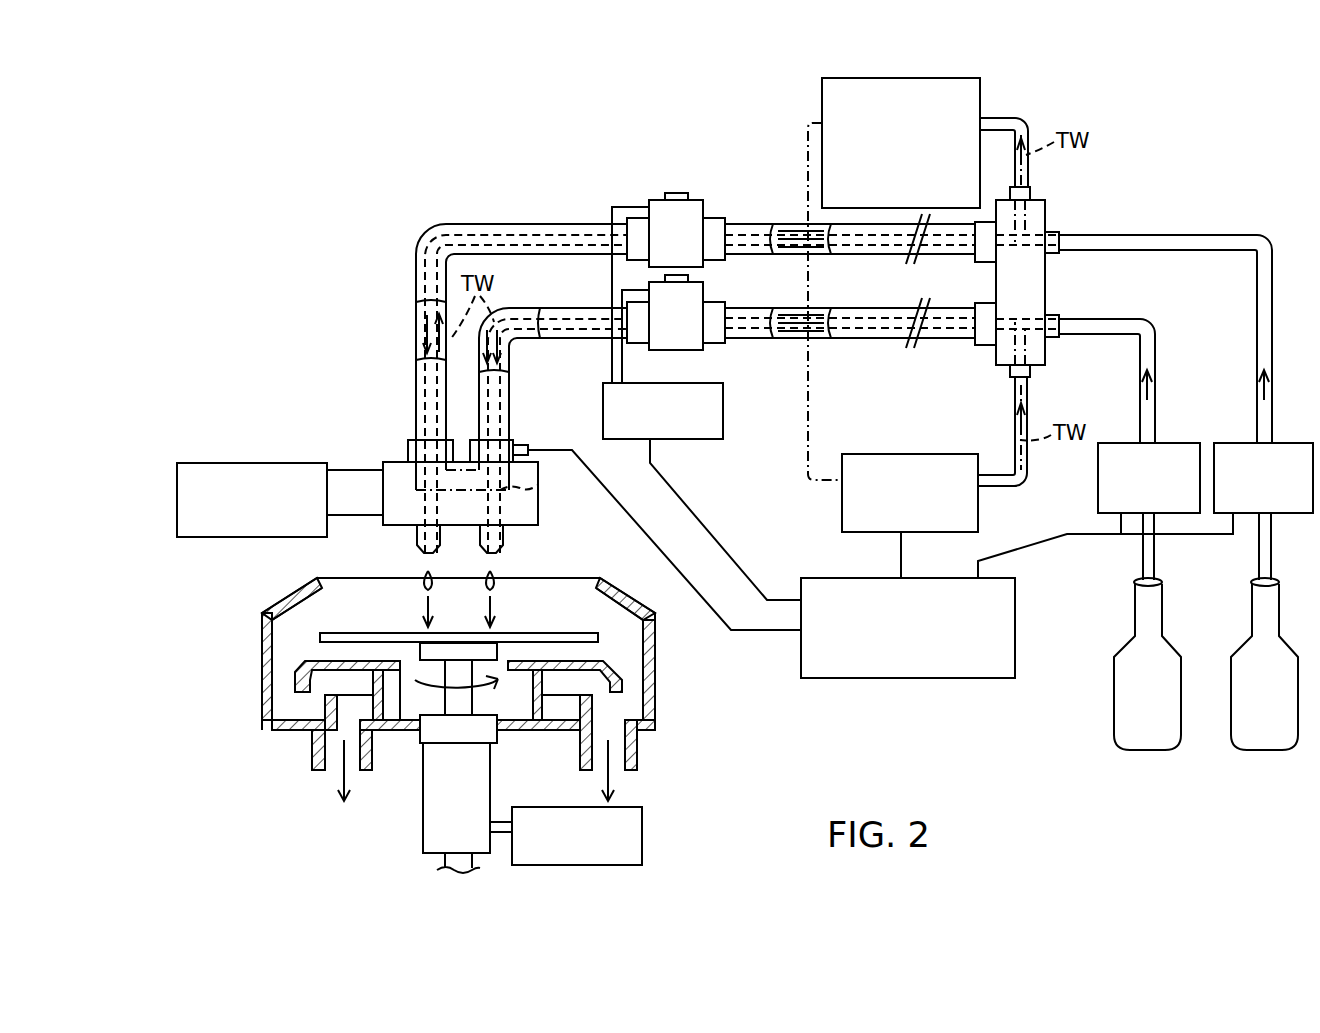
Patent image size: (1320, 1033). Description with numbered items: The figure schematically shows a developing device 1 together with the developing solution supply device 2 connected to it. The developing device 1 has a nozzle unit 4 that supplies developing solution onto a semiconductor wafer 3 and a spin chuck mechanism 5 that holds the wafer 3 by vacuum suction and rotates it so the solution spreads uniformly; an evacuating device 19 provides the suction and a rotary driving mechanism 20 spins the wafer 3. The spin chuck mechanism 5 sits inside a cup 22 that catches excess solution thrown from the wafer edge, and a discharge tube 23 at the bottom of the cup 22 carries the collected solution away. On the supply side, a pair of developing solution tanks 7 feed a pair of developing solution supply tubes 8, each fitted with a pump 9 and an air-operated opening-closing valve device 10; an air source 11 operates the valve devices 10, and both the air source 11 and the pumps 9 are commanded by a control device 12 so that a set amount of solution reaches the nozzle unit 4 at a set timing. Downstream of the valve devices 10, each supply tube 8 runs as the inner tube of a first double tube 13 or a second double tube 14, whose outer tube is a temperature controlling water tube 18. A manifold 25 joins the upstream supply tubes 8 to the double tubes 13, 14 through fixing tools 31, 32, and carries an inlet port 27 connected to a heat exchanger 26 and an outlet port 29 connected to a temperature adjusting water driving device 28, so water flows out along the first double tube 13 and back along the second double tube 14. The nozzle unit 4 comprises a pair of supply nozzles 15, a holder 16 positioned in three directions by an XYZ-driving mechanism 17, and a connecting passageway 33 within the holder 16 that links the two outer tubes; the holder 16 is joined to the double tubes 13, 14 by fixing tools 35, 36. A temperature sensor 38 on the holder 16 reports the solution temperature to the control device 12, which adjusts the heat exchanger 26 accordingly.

The developing device 1 is at (694, 735).
The developing solution supply device 2 is at (542, 201).
The semiconductor wafer 3 is at (350, 633).
The nozzle unit 4 is at (362, 440).
The spin chuck mechanism 5 is at (428, 707).
The developing solution tank 7 is at (1250, 636).
The developing solution supply tube 8 is at (417, 304).
The pump 9 is at (1178, 443).
The opening-closing valve device 10 is at (706, 192).
The air source 11 is at (724, 409).
The control device 12 is at (1017, 629).
The first double tube 13 is at (830, 340).
The second double tube 14 is at (846, 256).
The developing solution supply nozzle 15 is at (417, 548).
The holder 16 is at (532, 528).
The XYZ-driving mechanism 17 is at (246, 463).
The temperature controlling water tube 18 is at (417, 350).
The evacuating device 19 is at (642, 837).
The rotary driving mechanism 20 is at (422, 822).
The cup 22 is at (657, 648).
The discharge tube 23 is at (313, 757).
The manifold 25 is at (1058, 288).
The heat exchanger 26 is at (980, 510).
The inlet port 27 is at (1045, 365).
The temperature adjusting water driving device 28 is at (982, 103).
The outlet port 29 is at (1045, 212).
The fixing tool 31 is at (975, 347).
The fixing tool 32 is at (975, 262).
The connecting passageway 33 is at (540, 485).
The fixing tool 35 is at (497, 440).
The fixing tool 36 is at (410, 440).
The temperature sensor 38 is at (526, 444).